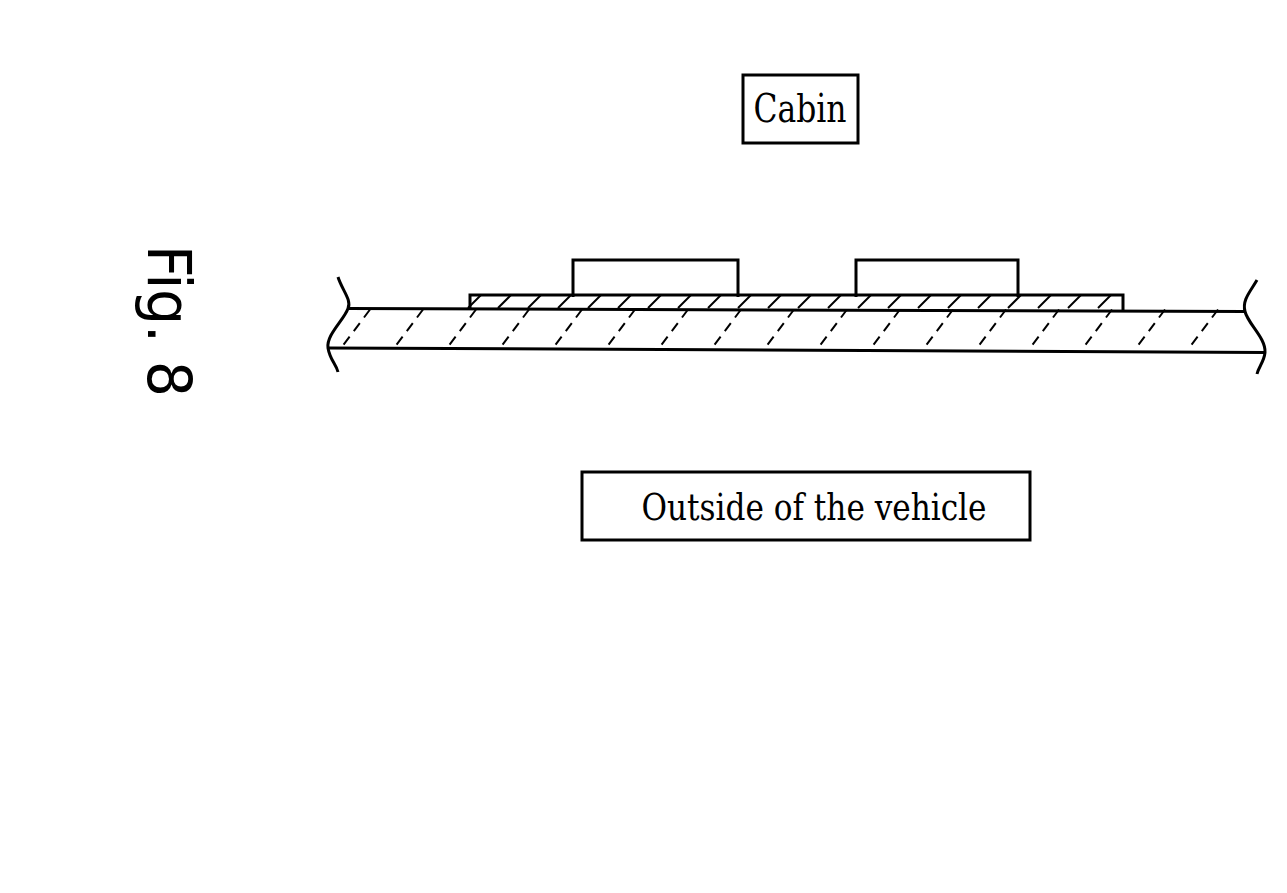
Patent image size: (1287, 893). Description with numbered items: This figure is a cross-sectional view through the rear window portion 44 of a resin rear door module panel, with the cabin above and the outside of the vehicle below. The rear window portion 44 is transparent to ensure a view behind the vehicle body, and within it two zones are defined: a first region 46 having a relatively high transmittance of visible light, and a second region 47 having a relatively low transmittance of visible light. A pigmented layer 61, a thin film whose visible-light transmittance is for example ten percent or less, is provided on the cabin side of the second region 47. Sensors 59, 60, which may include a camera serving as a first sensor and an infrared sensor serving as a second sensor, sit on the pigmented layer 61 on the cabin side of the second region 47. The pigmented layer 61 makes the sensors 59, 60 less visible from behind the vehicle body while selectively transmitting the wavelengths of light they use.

The rear window portion 44 is at (407, 320).
The first region 46 is at (472, 349).
The second region 47 is at (1123, 352).
The sensor 59 is at (632, 259).
The sensor 60 is at (945, 267).
The pigmented layer 61 is at (1070, 305).